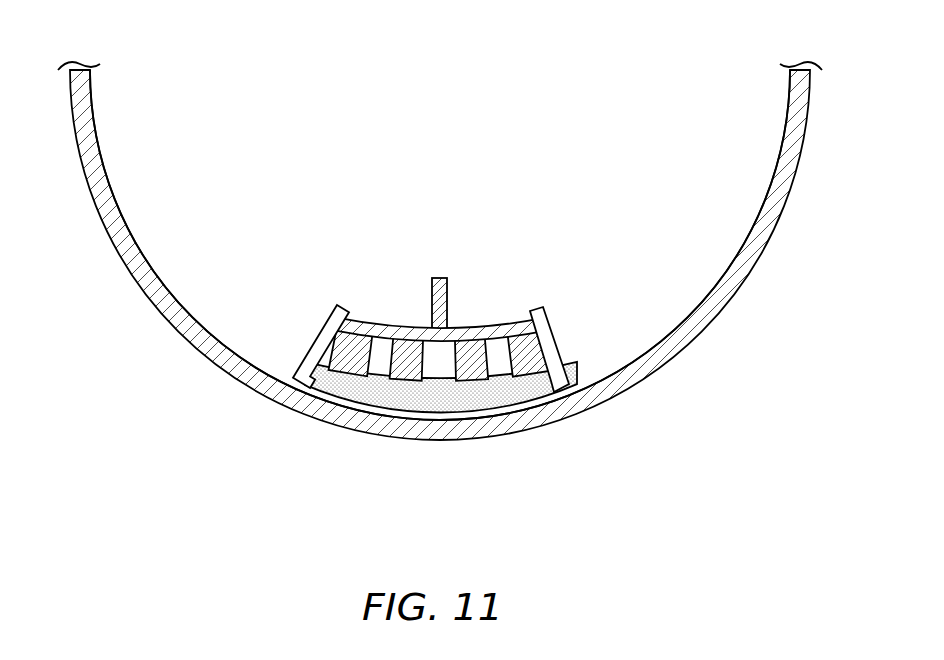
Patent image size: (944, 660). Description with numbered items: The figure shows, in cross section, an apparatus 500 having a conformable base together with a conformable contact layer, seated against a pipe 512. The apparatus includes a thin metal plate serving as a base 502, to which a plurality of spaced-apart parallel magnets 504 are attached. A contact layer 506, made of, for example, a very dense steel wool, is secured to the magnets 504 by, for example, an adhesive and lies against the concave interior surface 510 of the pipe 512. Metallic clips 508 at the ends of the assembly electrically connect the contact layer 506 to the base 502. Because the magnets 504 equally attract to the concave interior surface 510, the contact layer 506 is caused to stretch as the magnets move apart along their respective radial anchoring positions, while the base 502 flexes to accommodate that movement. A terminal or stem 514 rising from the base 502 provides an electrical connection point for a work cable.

The apparatus 500 is at (426, 325).
The base 502 is at (493, 320).
The magnets 504 is at (352, 368).
The contact layer 506 is at (332, 388).
The metallic clips 508 is at (317, 340).
The concave interior surface 510 is at (609, 373).
The pipe 512 is at (733, 292).
The terminal or stem 514 is at (432, 300).